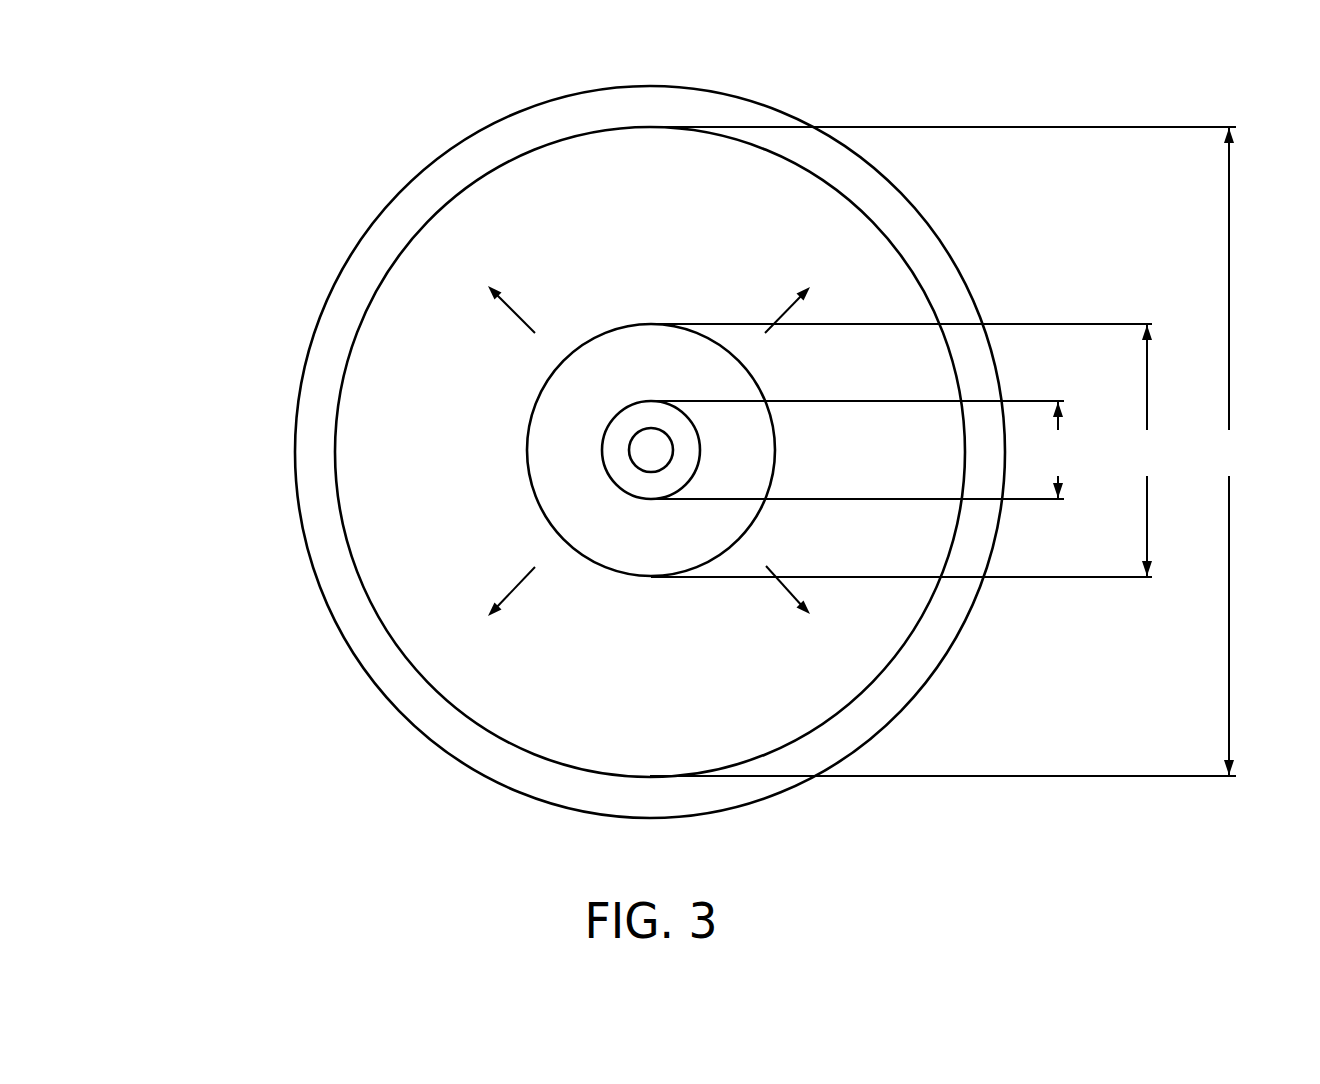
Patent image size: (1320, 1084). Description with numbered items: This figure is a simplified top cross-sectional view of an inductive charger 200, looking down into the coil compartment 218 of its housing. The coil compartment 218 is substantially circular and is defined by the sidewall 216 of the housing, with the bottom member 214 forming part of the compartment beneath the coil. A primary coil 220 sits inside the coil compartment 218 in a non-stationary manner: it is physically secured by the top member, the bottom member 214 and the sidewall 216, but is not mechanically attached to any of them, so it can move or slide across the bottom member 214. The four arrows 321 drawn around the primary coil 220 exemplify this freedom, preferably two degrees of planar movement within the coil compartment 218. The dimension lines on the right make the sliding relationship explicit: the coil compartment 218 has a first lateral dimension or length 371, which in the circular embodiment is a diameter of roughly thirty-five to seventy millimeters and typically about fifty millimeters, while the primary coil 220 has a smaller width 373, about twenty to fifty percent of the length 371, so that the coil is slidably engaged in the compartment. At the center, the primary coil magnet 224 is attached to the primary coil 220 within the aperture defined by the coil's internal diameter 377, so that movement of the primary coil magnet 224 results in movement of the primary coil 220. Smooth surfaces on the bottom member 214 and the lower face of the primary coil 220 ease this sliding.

The inductive charger 200 is at (283, 155).
The bottom member 214 is at (574, 185).
The sidewall 216 is at (356, 624).
The coil compartment 218 is at (395, 325).
The primary coil 220 is at (548, 437).
The primary coil magnet 224 is at (636, 473).
The arrows 321 is at (520, 322).
The length 371 is at (951, 451).
The width 373 is at (910, 450).
The internal diameter 377 is at (865, 450).